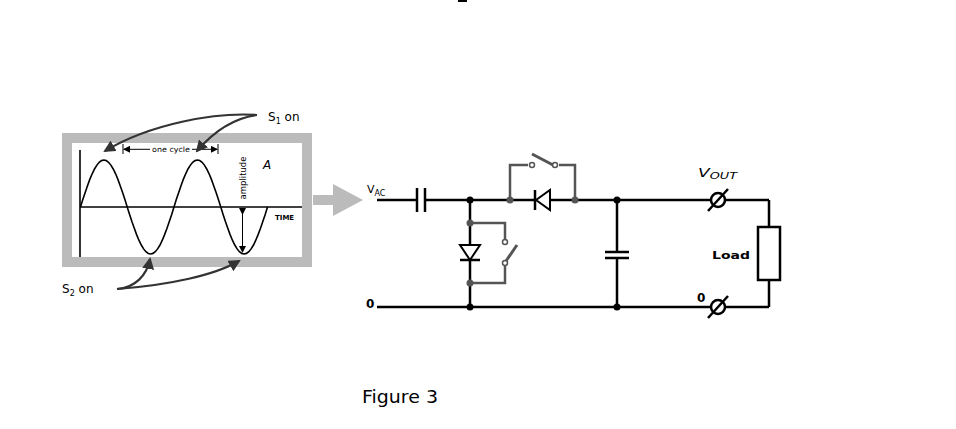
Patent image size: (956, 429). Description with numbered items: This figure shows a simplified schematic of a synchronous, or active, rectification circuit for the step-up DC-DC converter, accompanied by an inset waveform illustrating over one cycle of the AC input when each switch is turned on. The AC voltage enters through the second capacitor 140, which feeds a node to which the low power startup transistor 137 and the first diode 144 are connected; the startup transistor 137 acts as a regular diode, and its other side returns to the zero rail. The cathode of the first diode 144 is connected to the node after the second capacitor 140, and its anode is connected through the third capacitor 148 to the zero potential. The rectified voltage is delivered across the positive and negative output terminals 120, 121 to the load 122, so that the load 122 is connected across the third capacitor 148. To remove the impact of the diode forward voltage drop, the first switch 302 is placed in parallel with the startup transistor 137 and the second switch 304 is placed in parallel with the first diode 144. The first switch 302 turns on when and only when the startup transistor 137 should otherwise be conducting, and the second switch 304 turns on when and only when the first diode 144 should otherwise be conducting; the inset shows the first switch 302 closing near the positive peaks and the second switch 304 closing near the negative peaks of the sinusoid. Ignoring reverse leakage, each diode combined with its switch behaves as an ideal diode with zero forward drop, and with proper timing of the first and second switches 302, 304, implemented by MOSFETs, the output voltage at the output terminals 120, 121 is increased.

The capacitor C2 140 is at (415, 193).
The switch S2 304 is at (543, 151).
The diode D1 144 is at (577, 196).
The output terminal 120 is at (725, 190).
The load 122 is at (763, 257).
The transistor J1 137 is at (460, 248).
The switch S1 302 is at (510, 274).
The capacitor C3 148 is at (628, 262).
The output terminal 121 is at (708, 317).